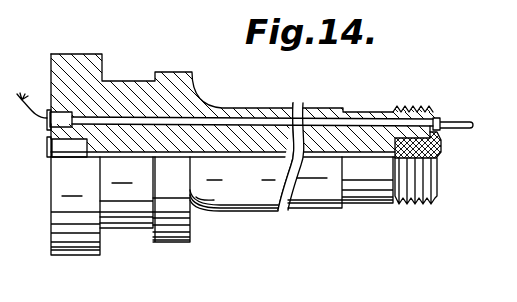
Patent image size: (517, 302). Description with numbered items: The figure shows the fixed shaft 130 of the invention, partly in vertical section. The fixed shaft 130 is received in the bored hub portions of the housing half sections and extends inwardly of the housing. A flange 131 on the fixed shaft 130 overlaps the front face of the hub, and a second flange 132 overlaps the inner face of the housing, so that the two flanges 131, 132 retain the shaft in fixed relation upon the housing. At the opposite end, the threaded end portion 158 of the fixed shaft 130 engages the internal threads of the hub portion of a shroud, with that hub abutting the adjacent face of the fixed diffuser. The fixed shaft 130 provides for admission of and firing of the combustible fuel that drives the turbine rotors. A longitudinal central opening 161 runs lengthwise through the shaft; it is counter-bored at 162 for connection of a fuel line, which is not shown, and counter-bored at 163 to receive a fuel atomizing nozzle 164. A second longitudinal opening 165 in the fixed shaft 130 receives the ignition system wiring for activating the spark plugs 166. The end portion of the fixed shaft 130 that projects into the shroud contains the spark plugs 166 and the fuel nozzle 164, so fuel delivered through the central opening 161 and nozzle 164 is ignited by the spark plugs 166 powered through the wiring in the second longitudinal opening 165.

The fixed shaft 130 is at (298, 208).
The flange 131 is at (67, 257).
The second flange 132 is at (175, 245).
The threaded end portion 158 is at (414, 205).
The longitudinal central opening 161 is at (240, 157).
The counter-bore 162 is at (72, 150).
The counter-bore 163 is at (432, 150).
The fuel atomizing nozzle 164 is at (441, 149).
The second longitudinal opening 165 is at (238, 121).
The spark plugs 166 is at (457, 121).